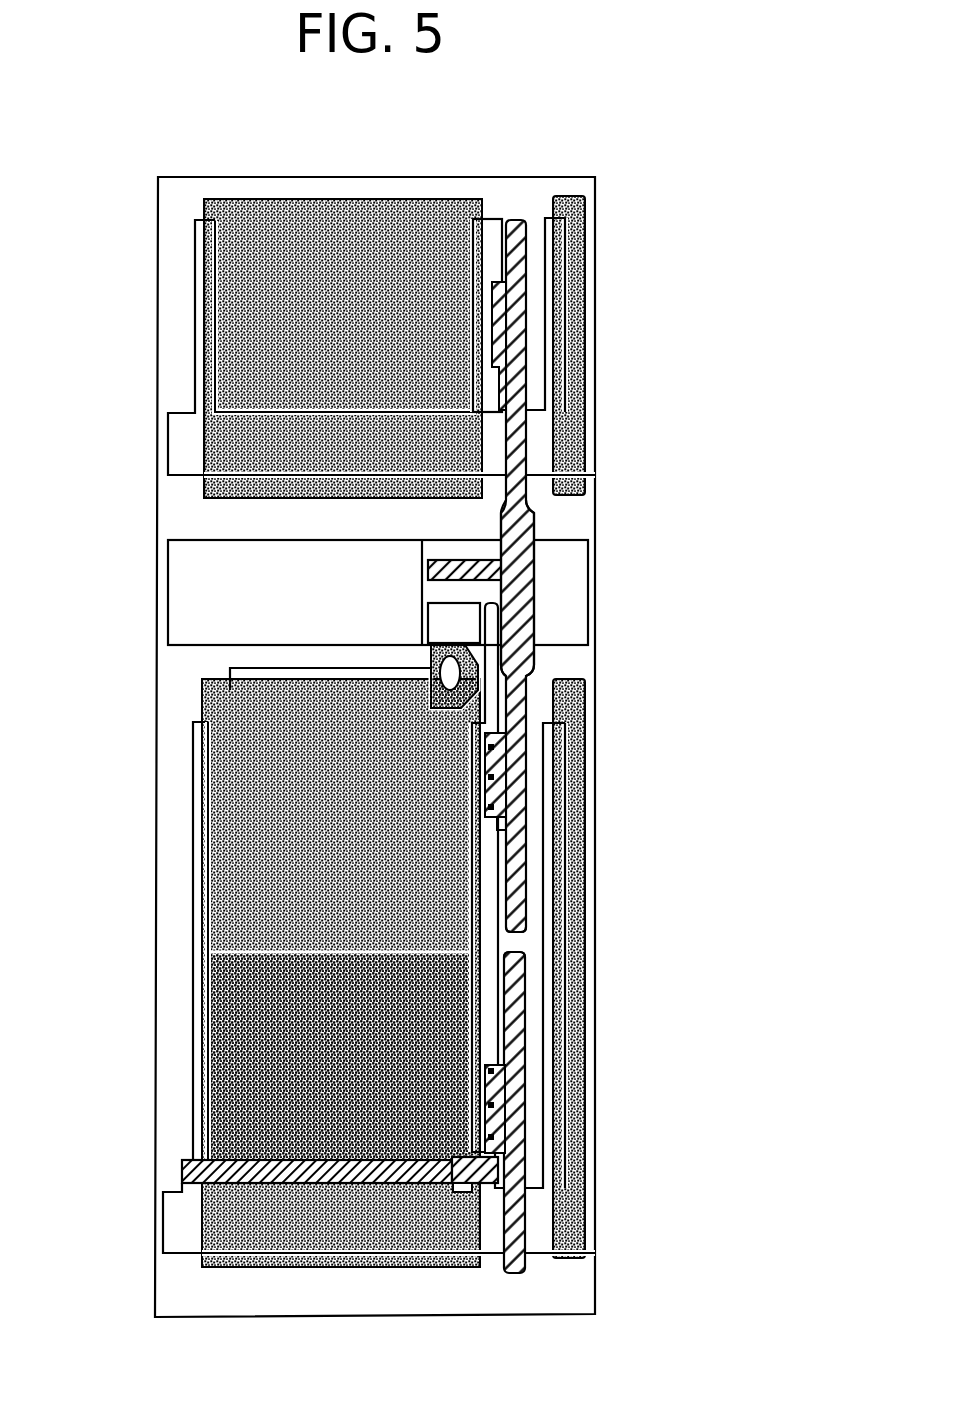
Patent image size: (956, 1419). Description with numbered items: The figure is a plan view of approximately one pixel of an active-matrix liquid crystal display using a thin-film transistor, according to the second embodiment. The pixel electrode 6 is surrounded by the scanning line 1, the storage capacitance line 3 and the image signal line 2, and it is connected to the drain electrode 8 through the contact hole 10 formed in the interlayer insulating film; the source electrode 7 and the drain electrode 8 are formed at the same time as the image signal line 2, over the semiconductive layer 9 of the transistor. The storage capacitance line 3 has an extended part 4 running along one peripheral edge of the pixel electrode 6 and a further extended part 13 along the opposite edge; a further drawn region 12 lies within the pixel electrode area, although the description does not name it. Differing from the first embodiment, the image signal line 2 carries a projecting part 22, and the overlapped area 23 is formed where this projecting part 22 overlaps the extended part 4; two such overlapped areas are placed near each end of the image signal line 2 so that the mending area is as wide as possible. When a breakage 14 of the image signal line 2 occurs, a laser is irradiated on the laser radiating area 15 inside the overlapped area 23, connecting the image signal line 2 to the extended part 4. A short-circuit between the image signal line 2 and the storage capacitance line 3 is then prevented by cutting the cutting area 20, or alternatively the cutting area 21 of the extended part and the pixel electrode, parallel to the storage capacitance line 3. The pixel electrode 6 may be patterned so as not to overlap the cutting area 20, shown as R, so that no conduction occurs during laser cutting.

The scanning line 1 is at (557, 598).
The image signal line 2 is at (518, 220).
The storage capacitance line 3 is at (537, 445).
The extended part of the storage capacitance line 4 is at (490, 258).
The pixel electrode 6 is at (212, 496).
The source electrode 7 is at (437, 568).
The drain electrode 8 is at (443, 623).
The semiconductive layer 9 is at (530, 558).
The contact hole 10 is at (447, 673).
The storage capacitor electrode 12 is at (467, 977).
The extended part of storage capacitance line 13 is at (200, 277).
The breakage of the image signal line 14 is at (508, 937).
The laser radiating area 15 is at (490, 806).
The cutting area 20 is at (477, 1183).
The cutting area of the extended part of the storage capacitance line and the pixel 21 is at (380, 1165).
The projecting part of the image signal line 22 is at (507, 305).
The overlapped area 23 is at (494, 780).
The region where the pixel electrode does not overlap the cutting area R is at (455, 1190).